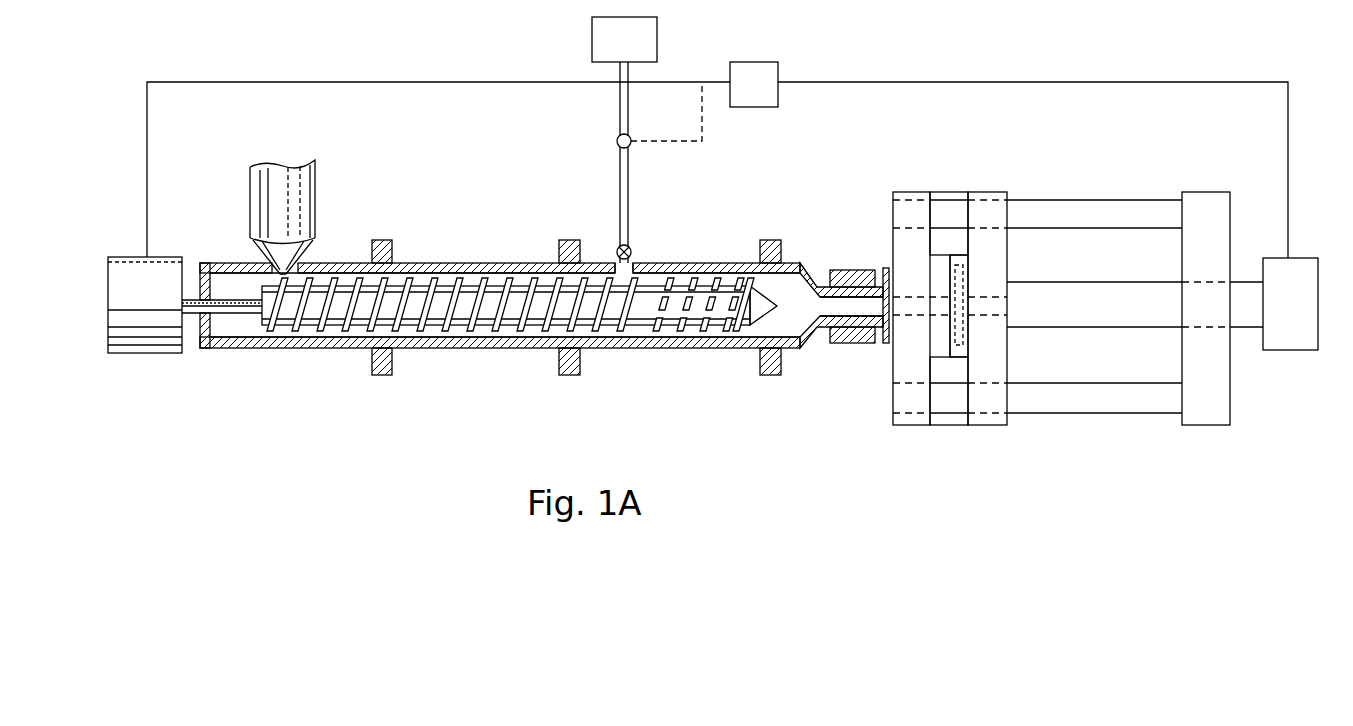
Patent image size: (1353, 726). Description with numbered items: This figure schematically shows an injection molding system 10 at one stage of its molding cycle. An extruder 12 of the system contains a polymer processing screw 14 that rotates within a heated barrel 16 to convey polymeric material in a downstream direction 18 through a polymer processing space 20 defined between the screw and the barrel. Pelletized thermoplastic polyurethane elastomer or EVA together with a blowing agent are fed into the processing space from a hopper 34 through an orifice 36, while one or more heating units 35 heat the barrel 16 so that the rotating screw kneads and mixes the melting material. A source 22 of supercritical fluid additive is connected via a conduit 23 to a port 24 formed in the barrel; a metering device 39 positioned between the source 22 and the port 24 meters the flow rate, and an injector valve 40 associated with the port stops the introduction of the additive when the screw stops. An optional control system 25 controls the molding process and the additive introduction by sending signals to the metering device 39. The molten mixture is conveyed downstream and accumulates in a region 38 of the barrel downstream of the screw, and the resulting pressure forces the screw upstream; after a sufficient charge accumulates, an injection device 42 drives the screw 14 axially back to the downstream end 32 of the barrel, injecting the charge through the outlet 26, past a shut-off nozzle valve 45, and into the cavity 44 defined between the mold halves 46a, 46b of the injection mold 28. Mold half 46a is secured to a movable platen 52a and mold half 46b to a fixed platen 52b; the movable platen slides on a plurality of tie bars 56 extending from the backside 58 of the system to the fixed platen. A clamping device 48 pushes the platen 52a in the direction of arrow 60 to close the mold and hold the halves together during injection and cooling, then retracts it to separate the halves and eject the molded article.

The injection molding system 10 is at (480, 70).
The extruder 12 is at (478, 364).
The polymer processing screw 14 is at (516, 293).
The barrel 16 is at (305, 348).
The downstream direction 18 is at (606, 409).
The polymer processing space 20 is at (437, 262).
The source of supercritical fluid additive 22 is at (592, 38).
The conduit 23 is at (620, 165).
The port 24 is at (640, 263).
The control system 25 is at (755, 62).
The outlet 26 is at (860, 332).
The injection mold 28 is at (976, 325).
The downstream end 32 is at (856, 414).
The hopper 34 is at (280, 172).
The heating units 35 is at (385, 240).
The orifice 36 is at (262, 229).
The region 38 is at (805, 290).
The metering device 39 is at (632, 141).
The injector valve 40 is at (632, 250).
The injection device 42 is at (148, 353).
The cavity 44 is at (962, 272).
The shut-off nozzle valve 45 is at (884, 268).
The mold half 46a is at (957, 255).
The mold half 46b is at (945, 360).
The clamping device 48 is at (1268, 350).
The movable platen 52a is at (990, 192).
The fixed platen 52b is at (905, 192).
The tie bars 56 is at (1087, 200).
The backside 58 is at (1182, 268).
The arrow 60 is at (737, 352).